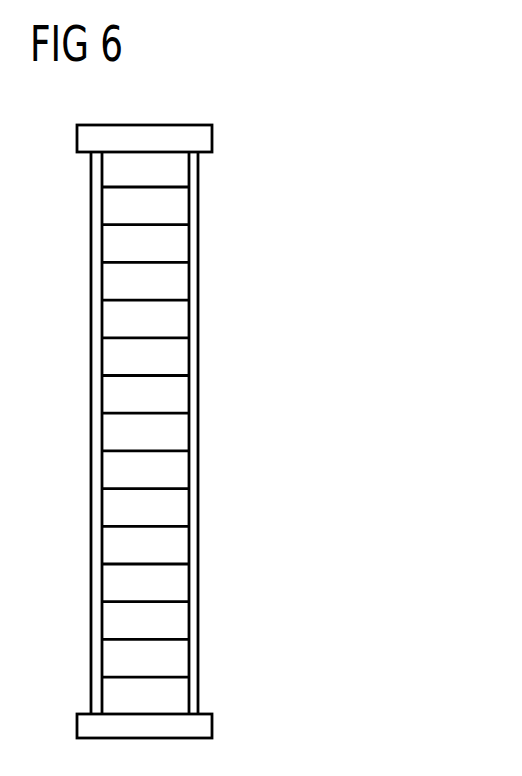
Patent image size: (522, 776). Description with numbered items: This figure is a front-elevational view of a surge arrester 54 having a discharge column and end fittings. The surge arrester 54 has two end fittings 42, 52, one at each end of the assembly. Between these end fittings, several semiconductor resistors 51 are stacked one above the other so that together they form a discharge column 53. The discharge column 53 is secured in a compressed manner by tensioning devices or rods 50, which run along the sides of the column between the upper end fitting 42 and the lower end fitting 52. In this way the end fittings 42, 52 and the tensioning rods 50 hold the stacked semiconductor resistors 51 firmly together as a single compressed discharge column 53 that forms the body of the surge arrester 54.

The end fitting 42 is at (207, 139).
The tensioning devices or rods 50 is at (98, 292).
The semiconductor resistors 51 is at (182, 613).
The end fitting 52 is at (202, 723).
The discharge column 53 is at (265, 148).
The surge arrester 54 is at (338, 135).